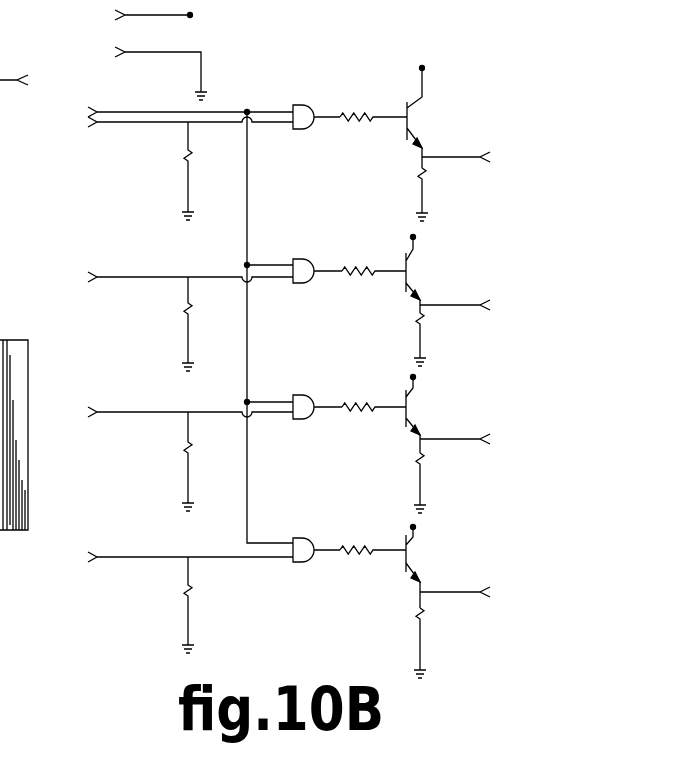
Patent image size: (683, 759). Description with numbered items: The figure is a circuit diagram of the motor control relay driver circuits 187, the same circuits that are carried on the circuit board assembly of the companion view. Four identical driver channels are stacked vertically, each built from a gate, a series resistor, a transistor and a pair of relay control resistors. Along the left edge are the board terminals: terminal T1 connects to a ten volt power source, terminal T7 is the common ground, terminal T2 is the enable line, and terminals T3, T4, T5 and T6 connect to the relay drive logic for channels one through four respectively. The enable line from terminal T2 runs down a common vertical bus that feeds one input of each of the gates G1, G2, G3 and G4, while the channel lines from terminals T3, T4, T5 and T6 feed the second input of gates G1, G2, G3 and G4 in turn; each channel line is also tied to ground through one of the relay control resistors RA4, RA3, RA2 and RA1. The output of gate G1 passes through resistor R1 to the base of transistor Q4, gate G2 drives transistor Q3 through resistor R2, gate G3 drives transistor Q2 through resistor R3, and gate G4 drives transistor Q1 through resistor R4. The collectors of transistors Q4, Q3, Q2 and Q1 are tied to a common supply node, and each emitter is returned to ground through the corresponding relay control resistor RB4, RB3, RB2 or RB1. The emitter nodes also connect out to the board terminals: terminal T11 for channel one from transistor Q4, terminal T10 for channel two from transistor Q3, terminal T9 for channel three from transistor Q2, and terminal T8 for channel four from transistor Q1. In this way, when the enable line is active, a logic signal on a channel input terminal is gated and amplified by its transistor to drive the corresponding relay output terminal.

The motor control relay driver circuits 187 is at (90, 226).
The board terminal T1 is at (138, 16).
The board terminal T2 is at (182, 112).
The board terminal T3 is at (182, 125).
The board terminal T4 is at (182, 278).
The board terminal T5 is at (182, 413).
The board terminal T6 is at (182, 558).
The board terminal T7 is at (145, 72).
The board terminal T8 is at (466, 592).
The board terminal T9 is at (466, 439).
The board terminal T10 is at (470, 305).
The board terminal T11 is at (471, 157).
The relay control resistor RA1 is at (168, 605).
The relay control resistor RA2 is at (168, 461).
The relay control resistor RA3 is at (168, 324).
The relay control resistor RA4 is at (168, 171).
The relay control resistor RB1 is at (437, 643).
The relay control resistor RB2 is at (437, 483).
The relay control resistor RB3 is at (437, 339).
The relay control resistor RB4 is at (439, 194).
The resistor R1 is at (373, 107).
The resistor R2 is at (374, 261).
The resistor R3 is at (374, 397).
The resistor R4 is at (373, 540).
The gate G1 is at (301, 127).
The gate G2 is at (301, 282).
The gate G3 is at (301, 417).
The gate G4 is at (301, 562).
The transistor Q1 is at (418, 567).
The transistor Q2 is at (418, 414).
The transistor Q3 is at (418, 274).
The transistor Q4 is at (419, 117).